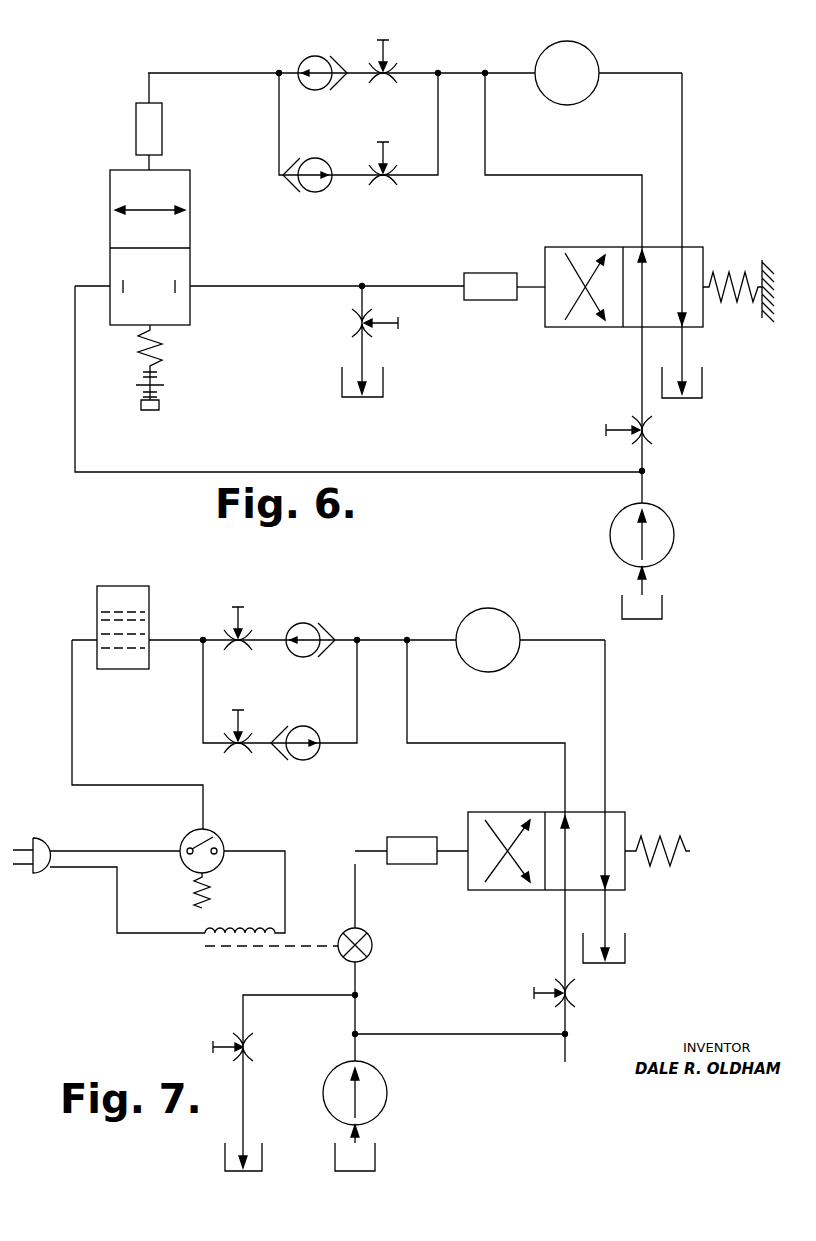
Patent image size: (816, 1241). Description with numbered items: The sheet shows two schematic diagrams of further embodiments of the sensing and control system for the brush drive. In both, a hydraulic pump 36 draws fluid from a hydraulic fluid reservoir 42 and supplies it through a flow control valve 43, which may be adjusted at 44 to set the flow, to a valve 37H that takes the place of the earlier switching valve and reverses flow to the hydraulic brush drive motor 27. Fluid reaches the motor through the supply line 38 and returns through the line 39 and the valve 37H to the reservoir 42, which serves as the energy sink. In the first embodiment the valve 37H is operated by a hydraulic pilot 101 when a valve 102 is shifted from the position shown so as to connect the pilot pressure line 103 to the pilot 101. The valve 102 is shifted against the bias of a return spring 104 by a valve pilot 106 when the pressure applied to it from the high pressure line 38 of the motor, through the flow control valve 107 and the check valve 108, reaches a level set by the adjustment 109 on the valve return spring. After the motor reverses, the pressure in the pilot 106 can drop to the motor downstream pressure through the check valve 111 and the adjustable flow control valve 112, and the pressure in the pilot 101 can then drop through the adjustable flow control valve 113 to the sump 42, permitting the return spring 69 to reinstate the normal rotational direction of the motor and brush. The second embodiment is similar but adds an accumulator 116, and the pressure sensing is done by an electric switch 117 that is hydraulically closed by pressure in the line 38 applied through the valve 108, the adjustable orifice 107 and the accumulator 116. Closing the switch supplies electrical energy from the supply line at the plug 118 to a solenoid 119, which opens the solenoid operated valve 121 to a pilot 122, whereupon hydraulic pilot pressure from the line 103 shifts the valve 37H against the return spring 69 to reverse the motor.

In FIG. 6, the hydraulic brush drive motor 27 is at (588, 50).
In FIG. 7, the hydraulic brush drive motor 27 is at (492, 608).
In FIG. 6, the hydraulic pump 36 is at (668, 518).
In FIG. 7, the hydraulic pump 36 is at (329, 1073).
In FIG. 6, the valve 37H is at (703, 318).
In FIG. 7, the valve 37H is at (625, 880).
In FIG. 6, the supply line 38 is at (485, 137).
In FIG. 7, the supply line 38 is at (407, 690).
In FIG. 6, the line 39 is at (682, 122).
In FIG. 6, the hydraulic fluid reservoir 42 is at (342, 377).
In FIG. 7, the hydraulic fluid reservoir 42 is at (625, 945).
In FIG. 6, the flow control valve 43 is at (654, 440).
In FIG. 7, the flow control valve 43 is at (576, 1010).
In FIG. 6, the adjustment 44 is at (606, 430).
In FIG. 7, the adjustment 44 is at (534, 993).
In FIG. 6, the return spring 69 is at (718, 270).
In FIG. 7, the return spring 69 is at (654, 842).
In FIG. 6, the hydraulic pilot 101 is at (480, 273).
In FIG. 6, the valve 102 is at (110, 185).
In FIG. 6, the pilot pressure line 103 is at (75, 365).
In FIG. 7, the pilot pressure line 103 is at (355, 980).
In FIG. 6, the return spring 104 is at (160, 347).
In FIG. 6, the valve pilot 106 is at (162, 126).
In FIG. 6, the flow control valve 107 is at (386, 40).
In FIG. 7, the flow control valve 107 is at (238, 607).
In FIG. 6, the check valve 108 is at (309, 54).
In FIG. 7, the check valve 108 is at (295, 625).
In FIG. 6, the adjustment 109 is at (152, 410).
In FIG. 6, the check valve 111 is at (326, 190).
In FIG. 7, the check valve 111 is at (313, 757).
In FIG. 6, the adjustable flow control valve 112 is at (386, 142).
In FIG. 6, the adjustable flow control valve 113 is at (397, 339).
In FIG. 7, the adjustable flow control valve 113 is at (252, 1040).
In FIG. 7, the accumulator 116 is at (149, 603).
In FIG. 7, the electric switch 117 is at (190, 831).
In FIG. 7, the plug 118 is at (47, 872).
In FIG. 7, the solenoid 119 is at (242, 928).
In FIG. 7, the solenoid operated valve 121 is at (343, 937).
In FIG. 7, the pilot 122 is at (405, 837).